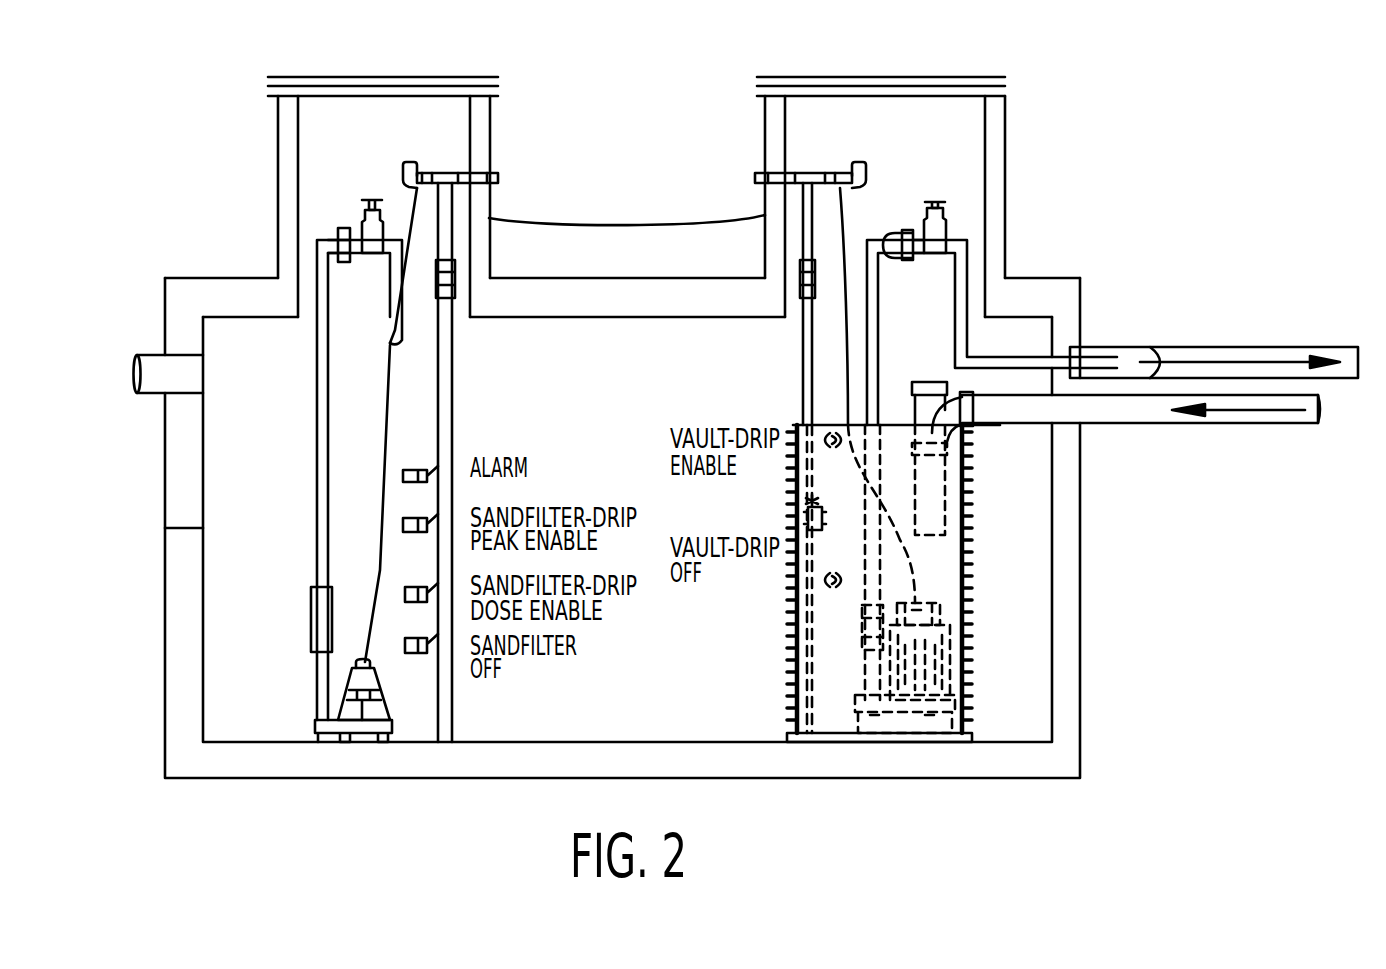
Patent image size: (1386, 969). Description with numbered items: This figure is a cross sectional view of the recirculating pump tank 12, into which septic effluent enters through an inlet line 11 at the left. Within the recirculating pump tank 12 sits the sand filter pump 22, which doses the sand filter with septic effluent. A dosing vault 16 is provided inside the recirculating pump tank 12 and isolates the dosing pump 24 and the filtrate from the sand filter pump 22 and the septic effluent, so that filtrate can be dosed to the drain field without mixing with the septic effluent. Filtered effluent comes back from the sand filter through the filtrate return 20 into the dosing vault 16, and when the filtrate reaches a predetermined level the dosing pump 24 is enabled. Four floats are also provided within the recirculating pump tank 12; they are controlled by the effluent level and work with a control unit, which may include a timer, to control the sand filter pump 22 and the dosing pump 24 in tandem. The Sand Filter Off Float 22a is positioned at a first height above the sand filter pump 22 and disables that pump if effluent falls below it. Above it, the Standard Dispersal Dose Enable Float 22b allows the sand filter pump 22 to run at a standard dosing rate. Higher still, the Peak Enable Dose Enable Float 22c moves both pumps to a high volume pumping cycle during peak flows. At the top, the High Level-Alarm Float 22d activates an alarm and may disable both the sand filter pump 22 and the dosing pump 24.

The inlet pipe 11 is at (135, 376).
The recirculating pump tank 12 is at (215, 467).
The dosing vault 16 is at (962, 566).
The filtrate return 20 is at (1320, 418).
The sand filter pump 22 is at (362, 733).
The Sand Filter Off Float 22a is at (413, 653).
The Standard Dispersal Dose Enable Float 22b is at (406, 590).
The Peak Enable Dose Enable Float 22c is at (403, 526).
The High Level-Alarm Float 22d is at (413, 470).
The dosing pump 24 is at (885, 742).